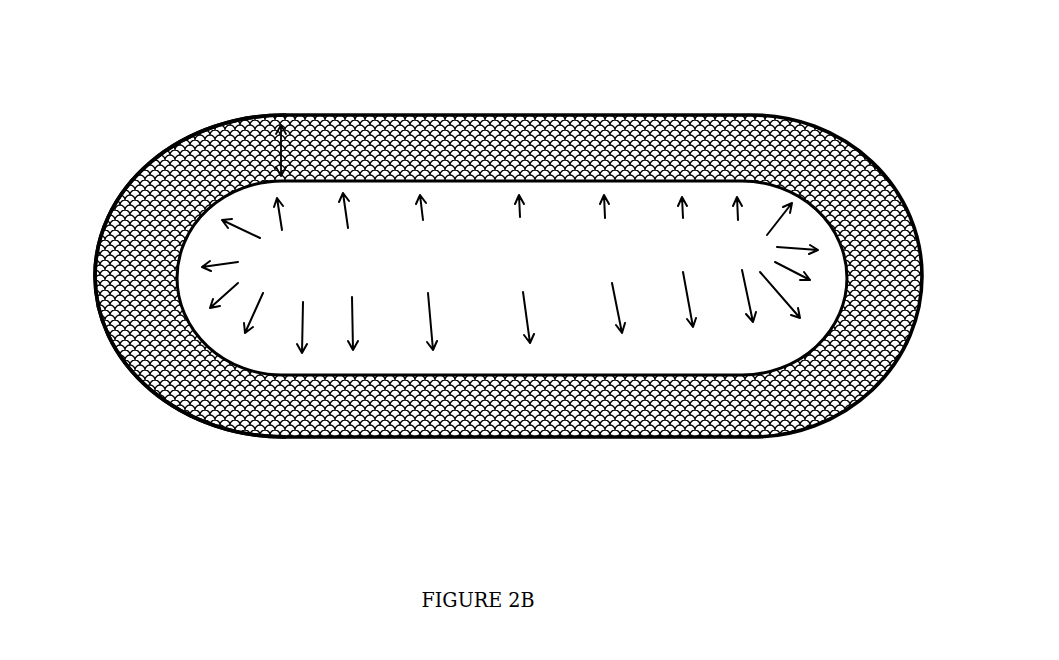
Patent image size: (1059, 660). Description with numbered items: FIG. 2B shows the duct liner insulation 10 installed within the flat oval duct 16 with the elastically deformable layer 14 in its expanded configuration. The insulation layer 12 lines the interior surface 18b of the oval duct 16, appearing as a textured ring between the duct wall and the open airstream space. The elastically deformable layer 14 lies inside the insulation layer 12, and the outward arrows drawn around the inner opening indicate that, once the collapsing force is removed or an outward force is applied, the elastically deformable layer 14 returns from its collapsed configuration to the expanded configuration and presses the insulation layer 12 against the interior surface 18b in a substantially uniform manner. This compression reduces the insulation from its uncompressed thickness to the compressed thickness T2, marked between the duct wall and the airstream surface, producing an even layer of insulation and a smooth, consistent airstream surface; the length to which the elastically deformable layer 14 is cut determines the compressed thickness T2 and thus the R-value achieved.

The duct liner insulation 10 is at (511, 232).
The insulation layer 12 is at (199, 148).
The elastically deformable layer 14 is at (810, 355).
The flat oval duct 16 is at (607, 116).
The interior surface 18b is at (133, 178).
The compressed thickness T2 is at (283, 152).